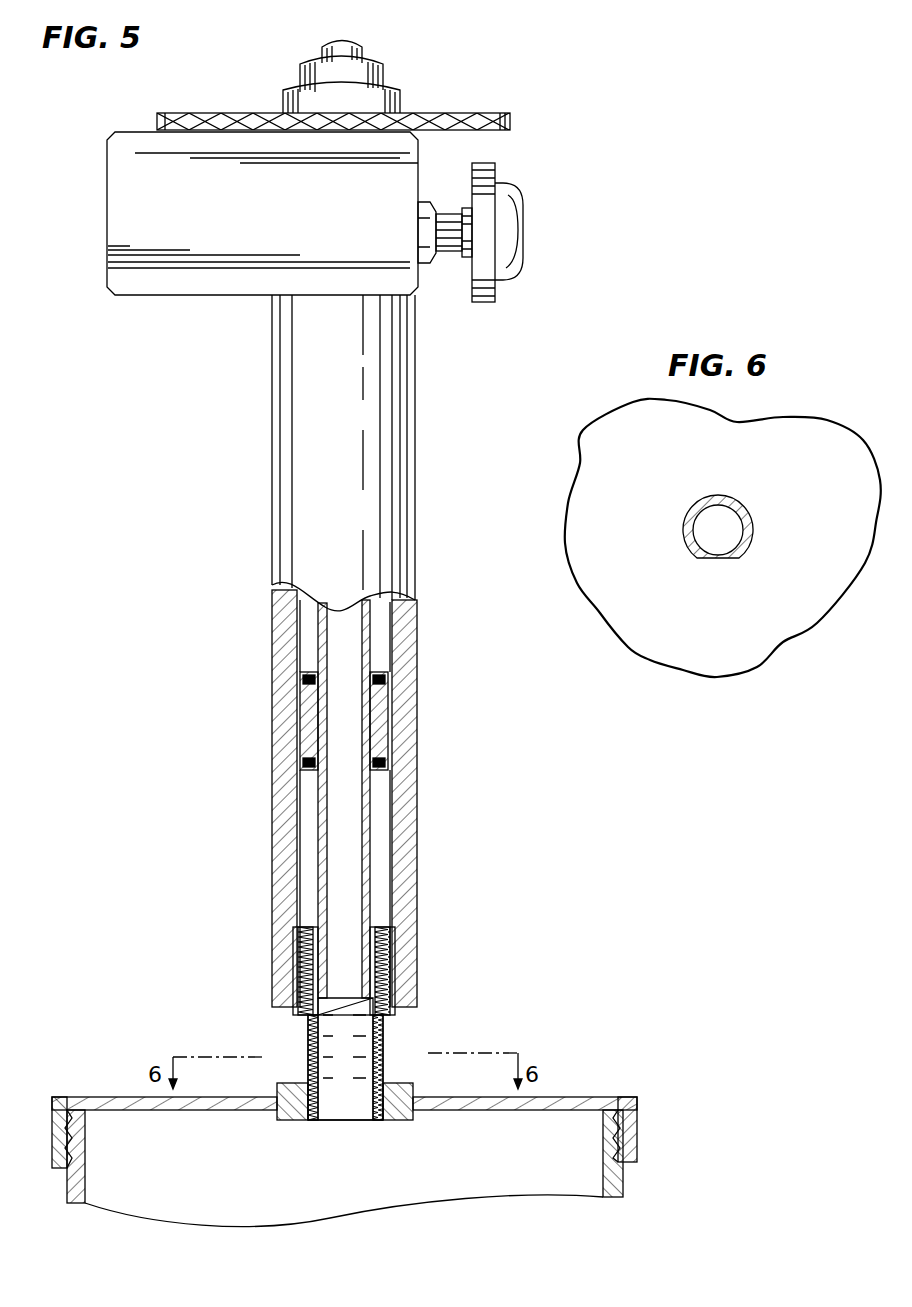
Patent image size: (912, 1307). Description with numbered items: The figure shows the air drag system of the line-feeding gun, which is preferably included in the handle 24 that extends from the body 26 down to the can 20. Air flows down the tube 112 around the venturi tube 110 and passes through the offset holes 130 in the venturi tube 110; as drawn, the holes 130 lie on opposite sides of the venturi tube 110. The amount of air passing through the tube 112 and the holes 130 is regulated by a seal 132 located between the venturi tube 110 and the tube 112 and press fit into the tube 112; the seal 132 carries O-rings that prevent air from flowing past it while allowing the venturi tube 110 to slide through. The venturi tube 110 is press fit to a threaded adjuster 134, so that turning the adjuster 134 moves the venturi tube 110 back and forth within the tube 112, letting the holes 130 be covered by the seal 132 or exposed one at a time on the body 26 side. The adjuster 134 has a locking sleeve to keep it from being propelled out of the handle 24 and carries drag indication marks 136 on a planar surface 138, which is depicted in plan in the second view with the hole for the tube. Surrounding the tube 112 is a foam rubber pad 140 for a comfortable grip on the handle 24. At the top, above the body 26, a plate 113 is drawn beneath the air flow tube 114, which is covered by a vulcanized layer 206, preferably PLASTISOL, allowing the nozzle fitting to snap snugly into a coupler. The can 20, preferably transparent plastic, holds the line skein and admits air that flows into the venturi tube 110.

In FIG. 5, the can 20 is at (666, 1122).
In FIG. 5, the handle 24 is at (438, 745).
In FIG. 5, the body 26 is at (147, 297).
In FIG. 5, the venturi tube 110 is at (370, 50).
In FIG. 5, the tube 112 is at (378, 788).
In FIG. 5, the mounting plate 113 is at (483, 113).
In FIG. 5, the air flow tube 114 is at (298, 80).
In FIG. 5, the offset holes 130 is at (318, 760).
In FIG. 5, the seal 132 is at (300, 718).
In FIG. 5, the threaded adjuster 134 is at (401, 1026).
In FIG. 5, the drag indication marks 136 is at (340, 1102).
In FIG. 6, the planar surface 138 is at (717, 560).
In FIG. 5, the foam rubber pad 140 is at (420, 943).
In FIG. 5, the vulcanized layer 206 is at (398, 92).